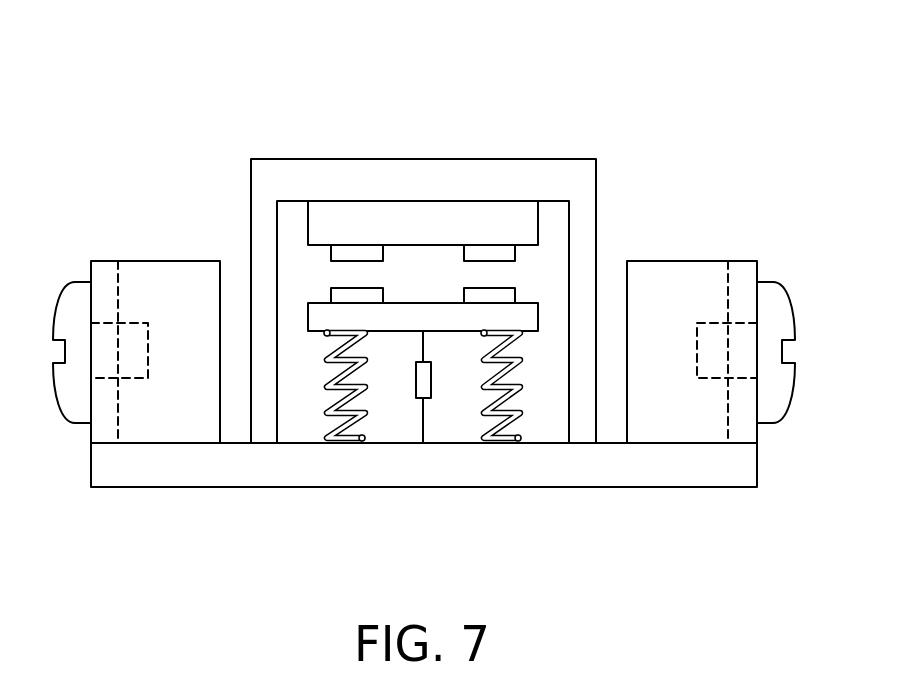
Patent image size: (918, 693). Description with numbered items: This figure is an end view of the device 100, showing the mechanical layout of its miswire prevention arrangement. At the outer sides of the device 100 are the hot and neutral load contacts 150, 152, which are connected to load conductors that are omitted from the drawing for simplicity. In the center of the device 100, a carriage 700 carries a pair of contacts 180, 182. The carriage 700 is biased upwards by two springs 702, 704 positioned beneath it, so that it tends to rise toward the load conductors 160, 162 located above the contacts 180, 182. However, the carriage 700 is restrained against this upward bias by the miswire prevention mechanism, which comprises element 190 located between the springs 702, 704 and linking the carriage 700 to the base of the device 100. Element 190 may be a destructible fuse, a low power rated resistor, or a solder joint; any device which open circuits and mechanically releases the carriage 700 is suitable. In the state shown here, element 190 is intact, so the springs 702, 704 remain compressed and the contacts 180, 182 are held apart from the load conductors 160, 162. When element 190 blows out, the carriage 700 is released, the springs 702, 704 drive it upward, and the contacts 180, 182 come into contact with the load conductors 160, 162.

The device 100 is at (715, 91).
The hot load contact 150 is at (678, 277).
The neutral load contact 152 is at (147, 280).
The load conductor 160 is at (488, 245).
The load conductor 162 is at (357, 245).
The contact 180 is at (530, 280).
The contact 182 is at (315, 280).
The element 190 is at (409, 383).
The carriage 700 is at (449, 318).
The spring 702 is at (347, 404).
The spring 704 is at (503, 404).